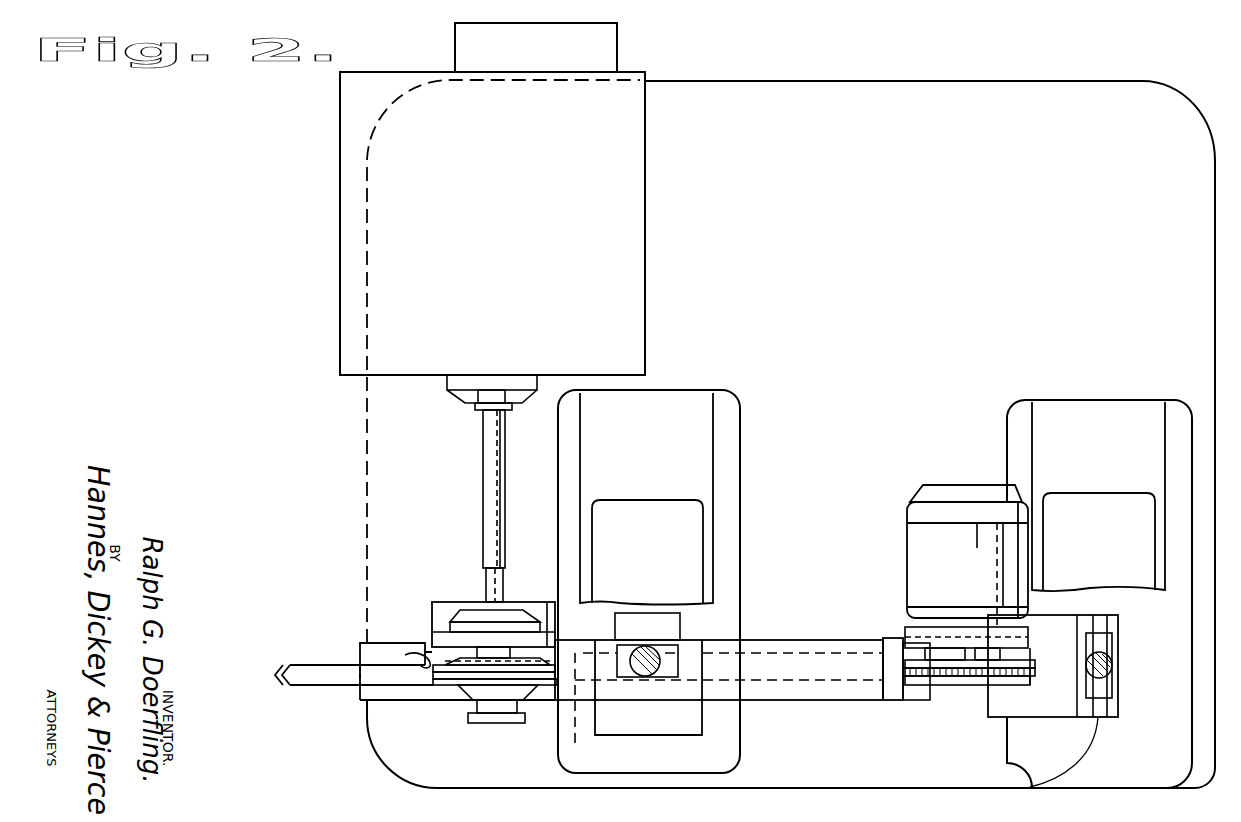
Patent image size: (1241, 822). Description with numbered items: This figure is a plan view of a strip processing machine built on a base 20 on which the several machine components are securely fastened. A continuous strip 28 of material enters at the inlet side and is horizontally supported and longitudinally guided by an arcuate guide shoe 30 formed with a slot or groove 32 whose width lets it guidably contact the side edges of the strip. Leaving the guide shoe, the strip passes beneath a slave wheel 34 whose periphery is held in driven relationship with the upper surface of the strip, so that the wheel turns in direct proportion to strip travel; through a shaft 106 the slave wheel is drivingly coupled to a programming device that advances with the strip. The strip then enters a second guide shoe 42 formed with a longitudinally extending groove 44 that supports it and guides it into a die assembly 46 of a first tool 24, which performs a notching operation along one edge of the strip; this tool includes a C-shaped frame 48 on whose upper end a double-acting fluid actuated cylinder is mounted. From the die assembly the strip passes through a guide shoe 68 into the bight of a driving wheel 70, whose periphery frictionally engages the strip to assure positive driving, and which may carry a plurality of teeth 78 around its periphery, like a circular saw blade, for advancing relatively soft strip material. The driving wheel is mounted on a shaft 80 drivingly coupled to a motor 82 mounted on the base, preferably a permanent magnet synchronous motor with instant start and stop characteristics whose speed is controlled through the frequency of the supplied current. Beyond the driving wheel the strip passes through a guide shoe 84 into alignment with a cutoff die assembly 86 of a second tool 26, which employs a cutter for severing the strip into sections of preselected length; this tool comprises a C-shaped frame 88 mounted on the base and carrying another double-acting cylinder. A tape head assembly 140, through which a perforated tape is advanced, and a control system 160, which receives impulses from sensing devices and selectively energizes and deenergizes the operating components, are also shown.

The base 20 is at (893, 93).
The tool 24 is at (683, 652).
The tool 26 is at (1118, 648).
The strip 28 is at (297, 673).
The arcuate guide shoe 30 is at (385, 690).
The slot or groove 32 is at (422, 660).
The slave wheel 34 is at (470, 704).
The second guide shoe 42 is at (558, 687).
The longitudinally extending groove 44 is at (729, 711).
The die assembly 46 is at (655, 725).
The C-shaped frame 48 is at (688, 520).
The guide shoe 68 is at (793, 688).
The driving wheel 70 is at (977, 685).
The teeth 78 is at (960, 677).
The shaft 80 is at (975, 612).
The motor 82 is at (917, 560).
The guide shoe 84 is at (1060, 707).
The cutoff die assembly 86 is at (1118, 680).
The C-shaped frame 88 is at (1080, 497).
The shaft 106 is at (490, 467).
The tape head assembly 140 is at (600, 47).
The control system 160 is at (622, 223).